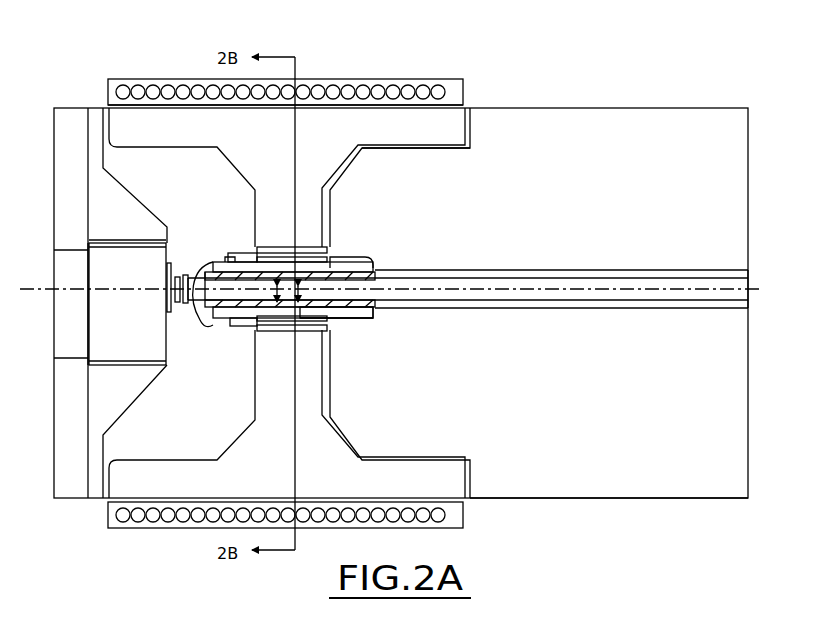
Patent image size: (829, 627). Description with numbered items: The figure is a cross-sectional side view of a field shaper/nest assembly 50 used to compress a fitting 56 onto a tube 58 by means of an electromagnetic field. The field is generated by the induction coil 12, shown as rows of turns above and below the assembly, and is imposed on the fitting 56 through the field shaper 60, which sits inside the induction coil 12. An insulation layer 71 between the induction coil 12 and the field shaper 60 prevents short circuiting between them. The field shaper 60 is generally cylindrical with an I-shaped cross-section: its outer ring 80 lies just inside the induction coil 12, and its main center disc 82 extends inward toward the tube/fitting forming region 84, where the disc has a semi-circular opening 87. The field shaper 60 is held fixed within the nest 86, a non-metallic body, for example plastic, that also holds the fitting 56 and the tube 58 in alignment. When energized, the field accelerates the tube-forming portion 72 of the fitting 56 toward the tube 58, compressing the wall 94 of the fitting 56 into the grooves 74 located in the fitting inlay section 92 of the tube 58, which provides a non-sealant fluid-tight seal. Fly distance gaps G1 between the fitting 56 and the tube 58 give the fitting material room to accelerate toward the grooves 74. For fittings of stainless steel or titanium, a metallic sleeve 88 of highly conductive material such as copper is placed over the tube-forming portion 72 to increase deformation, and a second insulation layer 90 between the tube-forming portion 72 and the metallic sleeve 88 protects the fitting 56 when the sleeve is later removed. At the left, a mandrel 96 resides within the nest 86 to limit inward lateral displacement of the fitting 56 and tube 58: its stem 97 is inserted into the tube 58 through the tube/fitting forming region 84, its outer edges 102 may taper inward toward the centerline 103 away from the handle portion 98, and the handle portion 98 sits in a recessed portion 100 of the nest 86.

The induction coil 12 is at (405, 80).
The field shaper/nest assembly 50 is at (634, 107).
The fitting 56 is at (240, 323).
The tube 58 is at (538, 270).
The field shaper 60 is at (477, 142).
The insulation layer 71 is at (456, 102).
The tube-forming portion 72 is at (320, 250).
The grooves 74 is at (297, 270).
The outer ring 80 is at (406, 134).
The main center disc 82 is at (300, 397).
The tube/fitting forming region 84 is at (347, 255).
The nest 86 is at (538, 498).
The semi-circular opening 87 is at (330, 322).
The metallic sleeve 88 is at (252, 327).
The second insulation layer 90 is at (337, 320).
The fitting inlay section 92 is at (293, 262).
The wall 94 is at (374, 262).
The mandrel 96 is at (87, 308).
The stem 97 is at (200, 306).
The handle portion 98 is at (118, 364).
The recessed portion 100 is at (112, 240).
The outer edges 102 is at (177, 328).
The centerline 103 is at (760, 291).
The fly distance gaps G1 is at (277, 304).